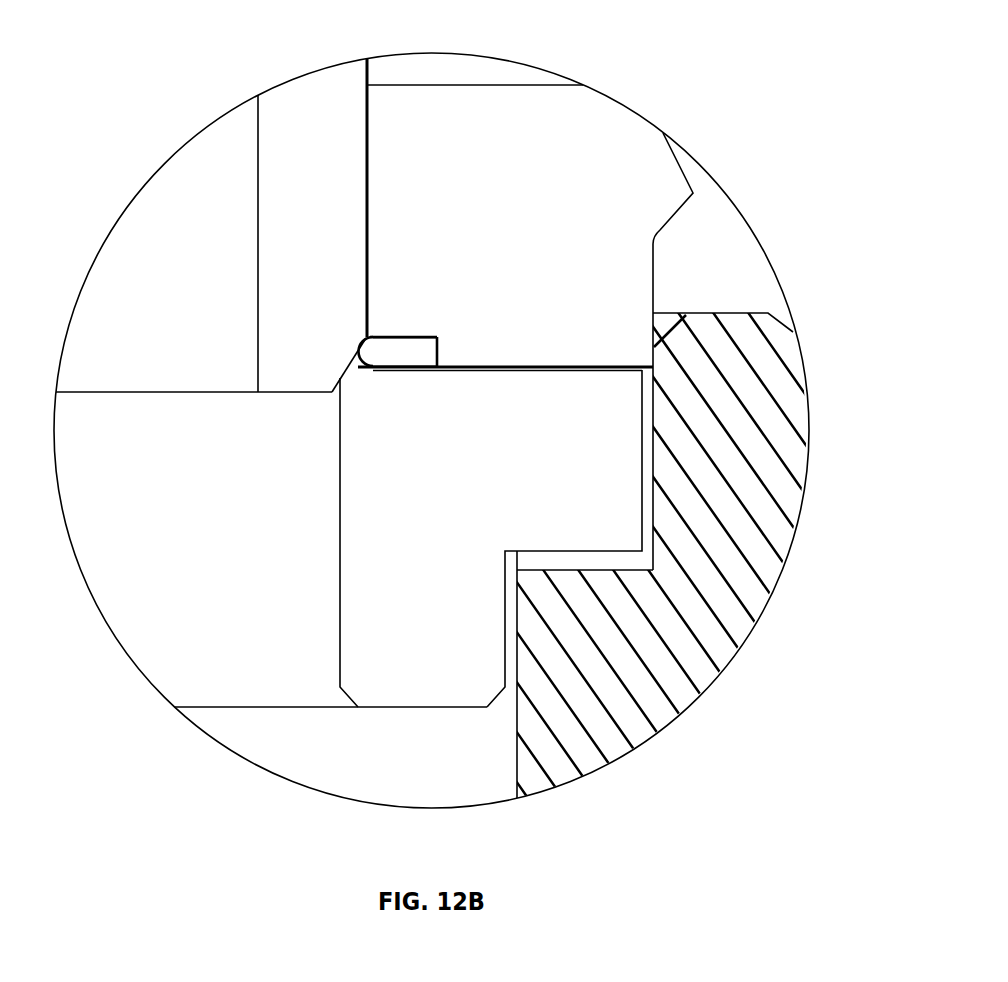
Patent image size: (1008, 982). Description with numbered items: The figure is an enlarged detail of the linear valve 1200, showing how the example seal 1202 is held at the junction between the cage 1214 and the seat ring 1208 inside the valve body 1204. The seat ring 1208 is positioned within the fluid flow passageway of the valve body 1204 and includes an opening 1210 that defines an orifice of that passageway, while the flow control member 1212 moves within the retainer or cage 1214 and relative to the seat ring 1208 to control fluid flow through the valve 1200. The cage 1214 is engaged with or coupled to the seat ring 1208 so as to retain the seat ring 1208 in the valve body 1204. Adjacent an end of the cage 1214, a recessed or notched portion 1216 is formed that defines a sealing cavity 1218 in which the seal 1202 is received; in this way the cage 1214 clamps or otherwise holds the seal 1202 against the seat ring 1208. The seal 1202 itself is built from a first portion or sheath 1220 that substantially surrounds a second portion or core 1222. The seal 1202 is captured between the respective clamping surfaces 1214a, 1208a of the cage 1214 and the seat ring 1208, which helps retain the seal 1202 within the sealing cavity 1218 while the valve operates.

The linear valve 1200 is at (568, 60).
The seal 1202 is at (452, 333).
The valve body 1204 is at (612, 730).
The seat ring 1208 is at (378, 577).
The clamping surface of the seat ring 1208a is at (540, 370).
The opening 1210 is at (175, 655).
The flow control member 1212 is at (283, 283).
The cage 1214 is at (613, 267).
The clamping surface of the cage 1214a is at (615, 363).
The recessed portion 1216 is at (385, 337).
The sealing cavity 1218 is at (440, 361).
The sheath 1220 is at (405, 368).
The core 1222 is at (370, 352).